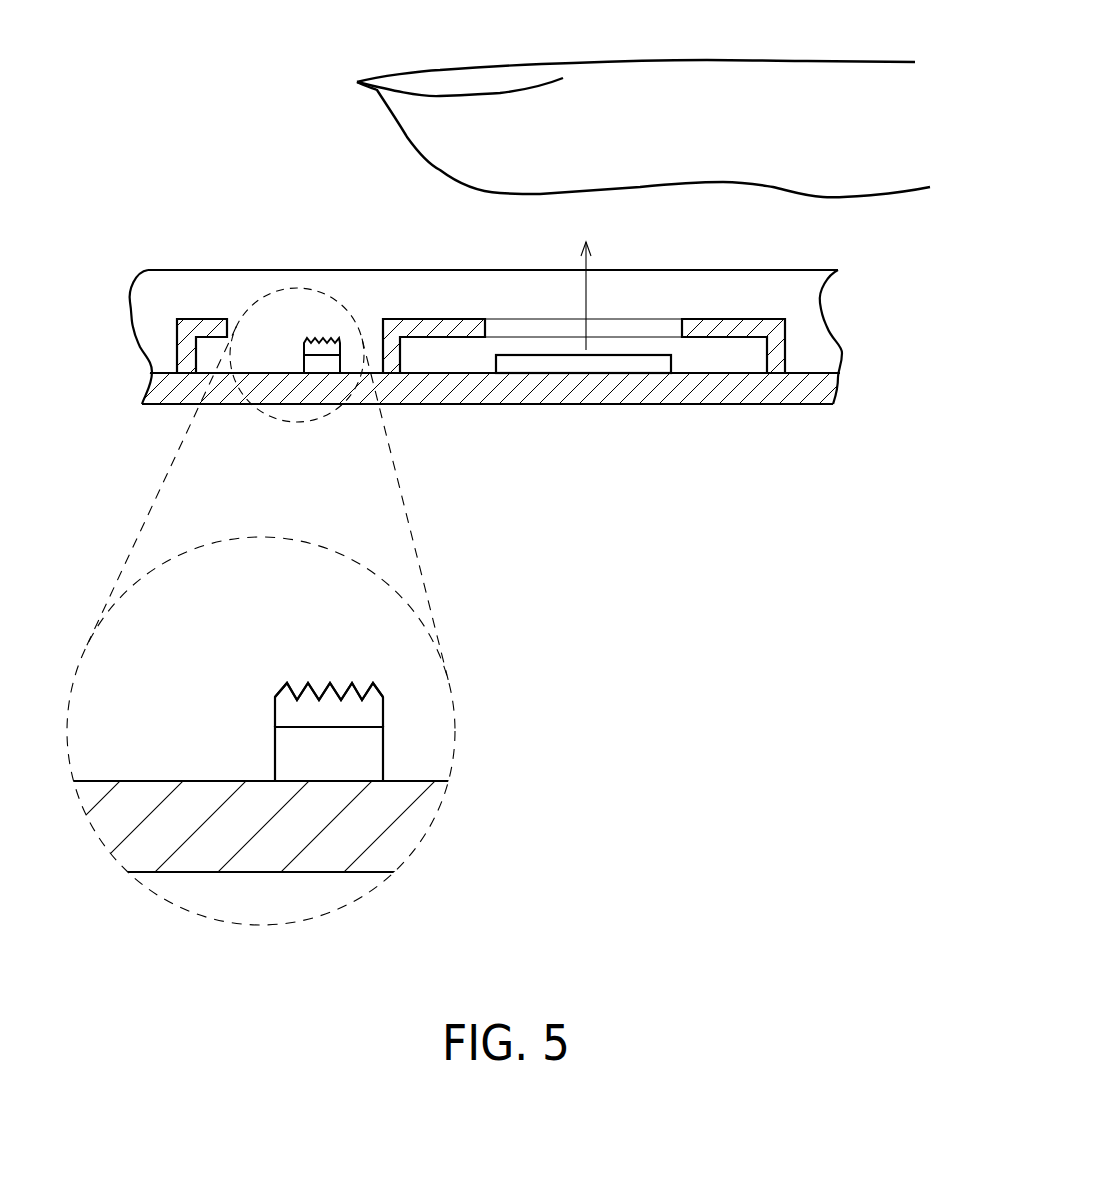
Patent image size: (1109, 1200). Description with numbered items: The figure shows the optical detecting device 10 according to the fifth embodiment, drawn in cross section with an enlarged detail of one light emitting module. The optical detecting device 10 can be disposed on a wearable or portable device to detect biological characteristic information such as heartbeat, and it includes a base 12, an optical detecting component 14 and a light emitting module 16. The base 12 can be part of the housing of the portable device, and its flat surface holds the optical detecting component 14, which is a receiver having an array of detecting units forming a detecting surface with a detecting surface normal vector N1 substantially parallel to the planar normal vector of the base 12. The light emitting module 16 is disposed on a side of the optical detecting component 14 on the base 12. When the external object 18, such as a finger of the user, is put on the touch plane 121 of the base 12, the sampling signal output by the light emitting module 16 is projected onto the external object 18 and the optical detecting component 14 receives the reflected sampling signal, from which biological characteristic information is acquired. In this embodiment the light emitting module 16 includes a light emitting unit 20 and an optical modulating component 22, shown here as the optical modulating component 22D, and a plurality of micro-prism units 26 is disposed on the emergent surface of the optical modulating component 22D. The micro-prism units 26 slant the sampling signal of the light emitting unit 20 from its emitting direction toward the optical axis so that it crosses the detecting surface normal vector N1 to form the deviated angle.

The optical detecting device 10 is at (165, 238).
The base 12 is at (735, 387).
The optical detecting component 14 is at (642, 362).
The light emitting module 16 is at (337, 307).
The external object 18 is at (818, 75).
The light emitting unit 20 is at (358, 755).
The optical modulating component 22 is at (420, 703).
The optical modulating component 22D is at (368, 712).
The micro-prism unit 26 is at (375, 684).
The touch plane 121 is at (548, 315).
The detecting surface normal vector N1 is at (586, 280).